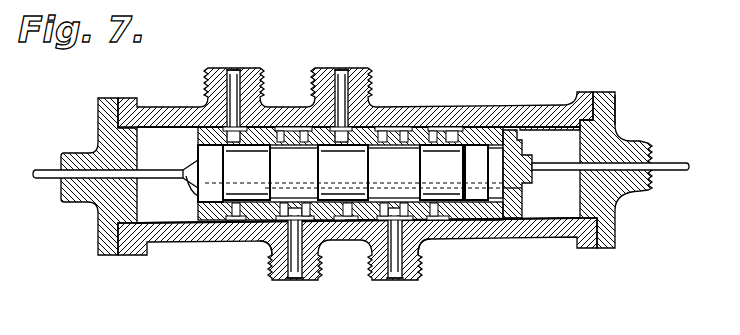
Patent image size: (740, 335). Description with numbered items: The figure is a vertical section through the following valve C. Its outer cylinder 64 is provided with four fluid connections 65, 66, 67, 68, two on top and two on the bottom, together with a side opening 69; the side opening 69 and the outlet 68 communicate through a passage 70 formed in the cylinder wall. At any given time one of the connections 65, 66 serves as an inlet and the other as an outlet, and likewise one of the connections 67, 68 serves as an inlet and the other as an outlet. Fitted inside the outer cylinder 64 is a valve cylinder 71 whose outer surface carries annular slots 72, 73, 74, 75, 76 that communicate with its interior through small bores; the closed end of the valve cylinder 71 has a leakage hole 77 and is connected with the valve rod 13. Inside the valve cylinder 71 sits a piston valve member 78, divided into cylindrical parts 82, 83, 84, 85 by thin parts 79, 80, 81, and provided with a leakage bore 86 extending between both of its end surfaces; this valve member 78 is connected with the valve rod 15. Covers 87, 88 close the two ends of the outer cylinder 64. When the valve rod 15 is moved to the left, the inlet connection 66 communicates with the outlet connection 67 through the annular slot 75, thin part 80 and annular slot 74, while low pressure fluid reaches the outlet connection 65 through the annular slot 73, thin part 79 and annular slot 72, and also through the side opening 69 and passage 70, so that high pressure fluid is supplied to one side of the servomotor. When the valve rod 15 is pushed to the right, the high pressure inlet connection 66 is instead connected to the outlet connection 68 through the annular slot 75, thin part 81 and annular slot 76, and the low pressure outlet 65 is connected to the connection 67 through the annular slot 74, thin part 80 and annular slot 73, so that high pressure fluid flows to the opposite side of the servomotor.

The valve rod 13 is at (666, 162).
The valve rod 15 is at (43, 169).
The outer cylinder 64 is at (152, 106).
The fluid connection 65 is at (395, 282).
The fluid connection 66 is at (292, 282).
The fluid connection 67 is at (342, 70).
The fluid connection 68 is at (233, 70).
The side opening 69 is at (452, 125).
The passage 70 is at (404, 112).
The valve cylinder 71 is at (511, 130).
The annular slot 72 is at (459, 226).
The annular slot 73 is at (419, 243).
The annular slot 74 is at (354, 222).
The annular slot 75 is at (273, 243).
The annular slot 76 is at (227, 221).
The leakage hole 77 is at (512, 226).
The piston valve member 78 is at (197, 196).
The thin part 79 is at (433, 154).
The thin part 80 is at (355, 154).
The thin part 81 is at (251, 154).
The cylindrical part 82 is at (490, 226).
The cylindrical part 83 is at (390, 262).
The cylindrical part 84 is at (293, 153).
The cylindrical part 85 is at (200, 143).
The leakage bore 86 is at (208, 222).
The cover 87 is at (95, 208).
The cover 88 is at (620, 199).
The following valve C is at (615, 109).